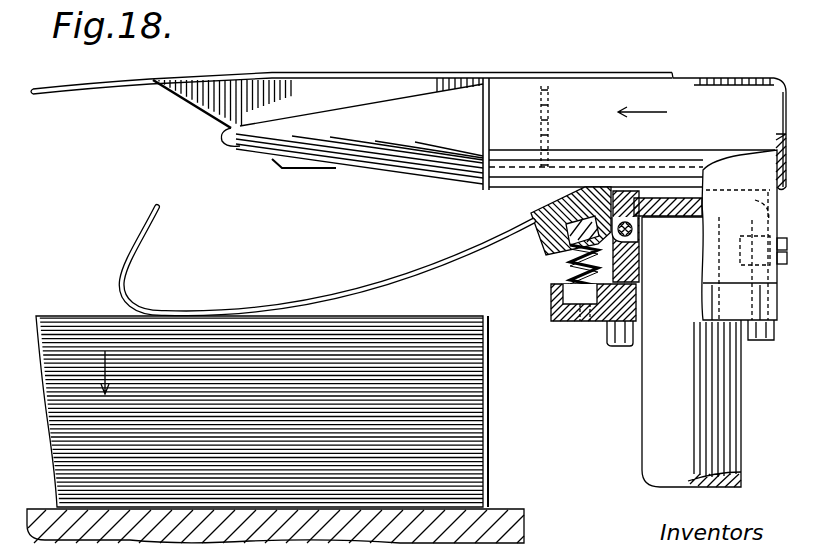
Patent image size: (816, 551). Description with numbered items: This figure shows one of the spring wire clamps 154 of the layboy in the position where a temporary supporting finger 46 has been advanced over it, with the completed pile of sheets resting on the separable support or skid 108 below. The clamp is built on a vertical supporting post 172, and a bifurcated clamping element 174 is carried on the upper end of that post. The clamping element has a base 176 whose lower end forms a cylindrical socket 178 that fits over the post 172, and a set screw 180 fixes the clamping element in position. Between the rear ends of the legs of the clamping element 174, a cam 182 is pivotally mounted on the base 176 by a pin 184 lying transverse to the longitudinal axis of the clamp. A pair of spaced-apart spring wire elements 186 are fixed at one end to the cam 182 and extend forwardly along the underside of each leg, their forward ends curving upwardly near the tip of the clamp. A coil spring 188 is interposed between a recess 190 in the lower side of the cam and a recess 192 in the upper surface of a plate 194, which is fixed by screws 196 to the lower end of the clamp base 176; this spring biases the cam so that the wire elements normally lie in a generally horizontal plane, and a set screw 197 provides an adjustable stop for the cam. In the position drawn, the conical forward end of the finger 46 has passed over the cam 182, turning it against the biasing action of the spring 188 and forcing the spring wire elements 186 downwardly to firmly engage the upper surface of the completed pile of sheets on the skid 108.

The temporary supporting finger 46 is at (680, 106).
The separable support or skid 108 is at (501, 508).
The spring wire clamp 154 is at (348, 103).
The vertical supporting post 172 is at (642, 440).
The bifurcated clamping element 174 is at (197, 115).
The base 176 is at (671, 187).
The cylindrical socket 178 is at (643, 258).
The set screw 180 is at (744, 245).
The cam 182 is at (531, 209).
The pin 184 is at (636, 231).
The spring wire element 186 is at (341, 297).
The coil spring 188 is at (562, 279).
The recess 190 is at (566, 253).
The recess 192 is at (586, 323).
The plate 194 is at (562, 324).
The screw 196 is at (621, 348).
The set screw 197 is at (559, 121).